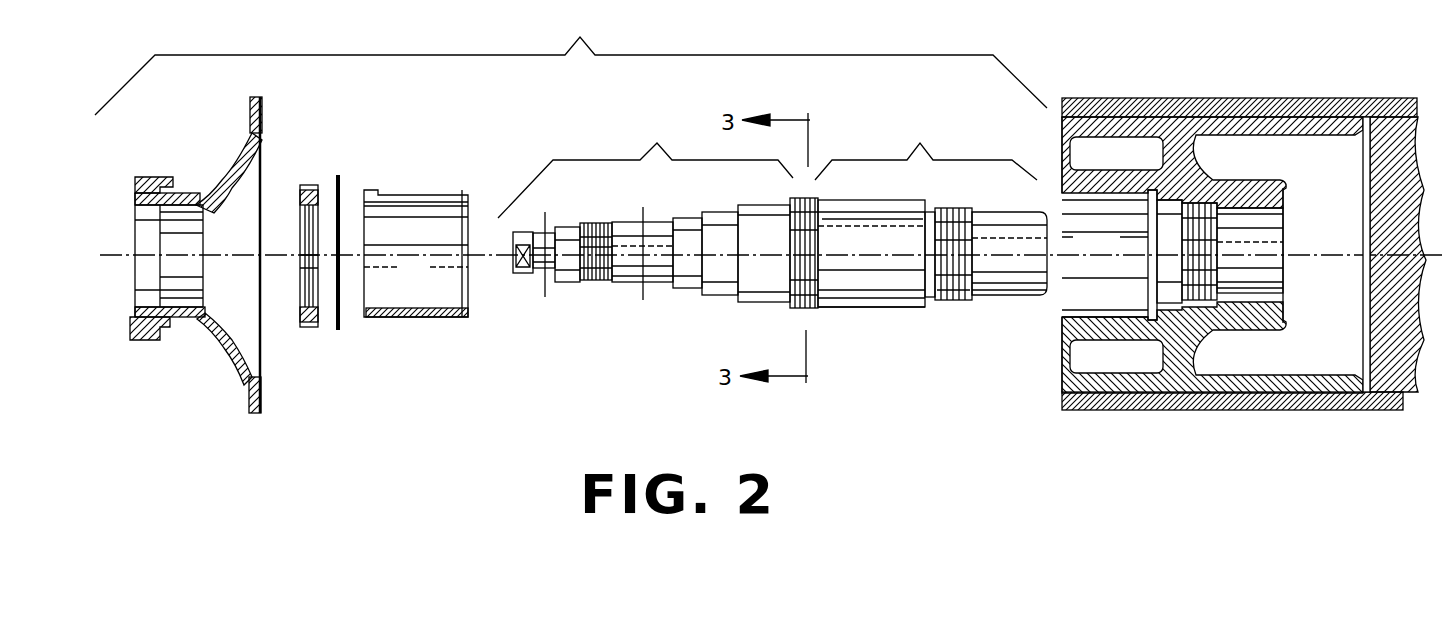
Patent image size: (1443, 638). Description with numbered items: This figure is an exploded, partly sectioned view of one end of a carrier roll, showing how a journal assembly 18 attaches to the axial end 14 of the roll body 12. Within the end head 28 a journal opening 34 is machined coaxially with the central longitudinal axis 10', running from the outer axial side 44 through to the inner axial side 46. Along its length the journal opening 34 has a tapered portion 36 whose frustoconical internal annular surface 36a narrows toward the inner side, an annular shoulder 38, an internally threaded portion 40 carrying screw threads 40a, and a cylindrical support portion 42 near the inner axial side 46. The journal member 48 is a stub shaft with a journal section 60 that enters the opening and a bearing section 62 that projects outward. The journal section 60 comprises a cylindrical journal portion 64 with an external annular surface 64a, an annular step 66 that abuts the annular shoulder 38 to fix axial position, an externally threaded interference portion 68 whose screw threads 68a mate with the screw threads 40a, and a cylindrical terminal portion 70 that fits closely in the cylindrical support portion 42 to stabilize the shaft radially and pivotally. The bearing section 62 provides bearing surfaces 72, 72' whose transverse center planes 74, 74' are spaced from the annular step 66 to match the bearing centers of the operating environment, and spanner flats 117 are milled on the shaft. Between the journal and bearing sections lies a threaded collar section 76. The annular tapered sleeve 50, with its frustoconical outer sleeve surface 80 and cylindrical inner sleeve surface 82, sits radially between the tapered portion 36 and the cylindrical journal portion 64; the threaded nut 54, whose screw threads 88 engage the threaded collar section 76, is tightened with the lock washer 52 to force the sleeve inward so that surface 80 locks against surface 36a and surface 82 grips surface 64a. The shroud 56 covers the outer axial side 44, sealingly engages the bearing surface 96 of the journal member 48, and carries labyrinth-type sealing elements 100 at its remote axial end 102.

The journal assembly 18 is at (571, 60).
The shroud 56 is at (220, 166).
The remote axial end of the shroud 102 is at (145, 185).
The labyrinth-type sealing elements 100 is at (136, 330).
The threaded nut 54 is at (309, 185).
The screw threads 88 is at (298, 339).
The lock washer 52 is at (340, 315).
The tapered sleeve 50 is at (400, 190).
The frustoconical outer sleeve surface 80 is at (432, 196).
The cylindrical inner sleeve surface 82 is at (412, 308).
The bearing section 62 is at (657, 143).
The spanner flats 117 is at (514, 262).
The bearing surface 72' is at (526, 280).
The transverse center plane 74' is at (563, 237).
The bearing surface 72 is at (614, 273).
The transverse center plane 74 is at (627, 238).
The bearing surface 96 is at (775, 205).
The threaded collar section 76 is at (792, 308).
The journal section 60 is at (920, 143).
The cylindrical journal portion 64 is at (862, 307).
The external annular surface 64a is at (893, 241).
The journal member 48 is at (852, 350).
The annular step 66 is at (932, 212).
The externally threaded interference engagement portion 68 is at (926, 265).
The screw threads 68a is at (942, 295).
The cylindrical terminal portion 70 is at (1003, 218).
The roll body 12 is at (1290, 88).
The end head 28 is at (1212, 100).
The axial end 14 is at (1197, 410).
The inner axial side 46 is at (1366, 345).
The outer axial side 44 is at (1058, 182).
The journal opening 34 is at (1060, 305).
The tapered portion 36 is at (1080, 298).
The internal annular surface 36a is at (1120, 250).
The annular shoulder 38 is at (1150, 196).
The internally threaded portion 40 is at (1157, 270).
The screw threads 40a is at (1198, 268).
The cylindrical support portion 42 is at (1262, 212).
The central longitudinal axis 10' is at (1316, 255).